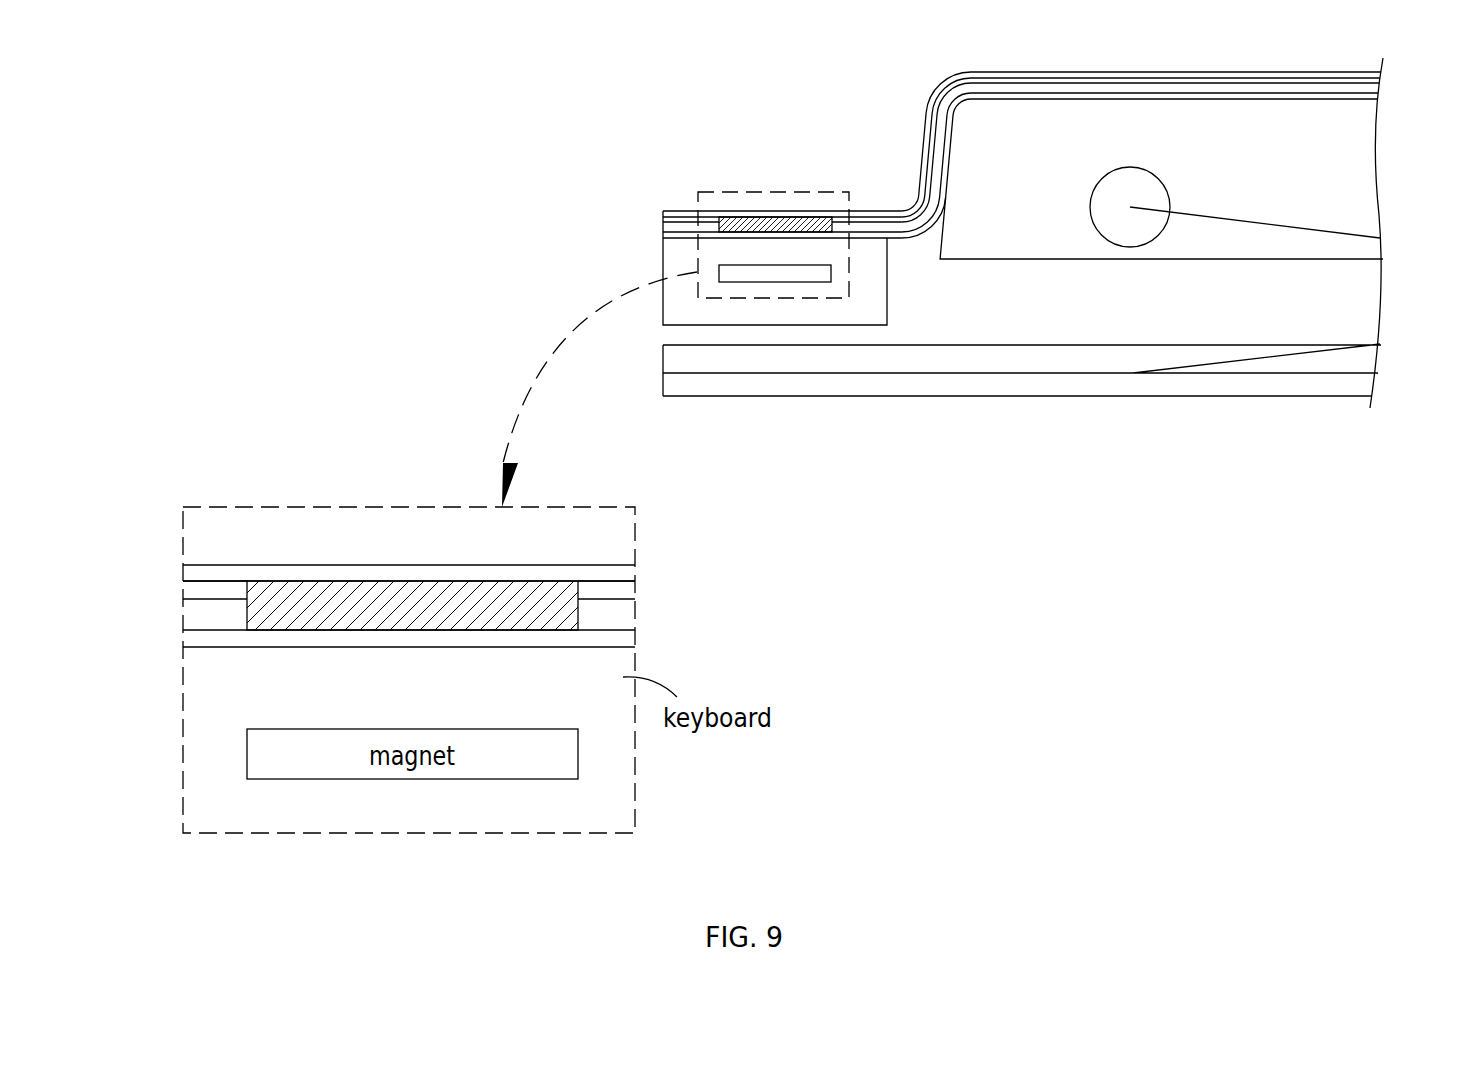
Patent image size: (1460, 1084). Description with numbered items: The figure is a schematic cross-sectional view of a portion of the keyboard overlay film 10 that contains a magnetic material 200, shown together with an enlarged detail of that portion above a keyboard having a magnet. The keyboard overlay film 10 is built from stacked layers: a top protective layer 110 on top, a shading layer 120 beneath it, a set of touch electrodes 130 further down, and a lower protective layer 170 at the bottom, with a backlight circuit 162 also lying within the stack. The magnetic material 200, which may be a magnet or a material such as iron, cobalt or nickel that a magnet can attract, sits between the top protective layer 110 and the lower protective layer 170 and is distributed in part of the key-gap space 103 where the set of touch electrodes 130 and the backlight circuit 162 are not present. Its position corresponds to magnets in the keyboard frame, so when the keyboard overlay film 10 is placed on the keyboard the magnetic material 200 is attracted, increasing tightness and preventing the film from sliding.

The keyboard overlay film 10 is at (661, 210).
The key-gap space 103 is at (873, 194).
The set of touch electrodes 130 is at (1357, 80).
The backlight circuit 162 is at (1357, 100).
The top protective layer 110 is at (197, 571).
The shading layer 120 is at (197, 593).
The lower protective layer 170 is at (197, 640).
The magnetic material 200 is at (572, 612).